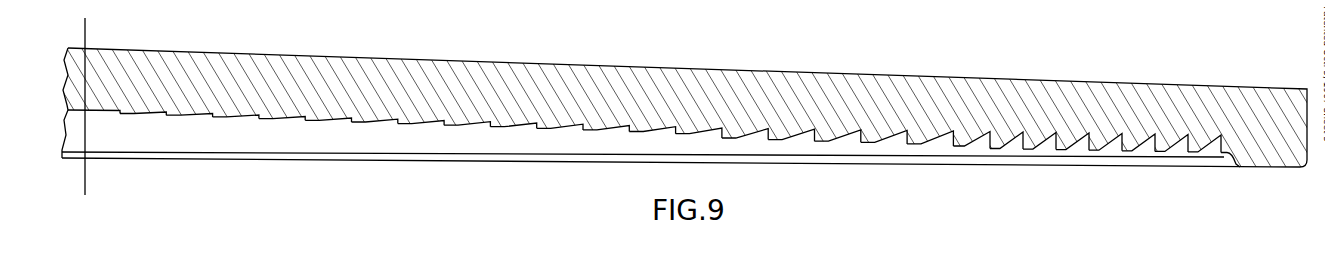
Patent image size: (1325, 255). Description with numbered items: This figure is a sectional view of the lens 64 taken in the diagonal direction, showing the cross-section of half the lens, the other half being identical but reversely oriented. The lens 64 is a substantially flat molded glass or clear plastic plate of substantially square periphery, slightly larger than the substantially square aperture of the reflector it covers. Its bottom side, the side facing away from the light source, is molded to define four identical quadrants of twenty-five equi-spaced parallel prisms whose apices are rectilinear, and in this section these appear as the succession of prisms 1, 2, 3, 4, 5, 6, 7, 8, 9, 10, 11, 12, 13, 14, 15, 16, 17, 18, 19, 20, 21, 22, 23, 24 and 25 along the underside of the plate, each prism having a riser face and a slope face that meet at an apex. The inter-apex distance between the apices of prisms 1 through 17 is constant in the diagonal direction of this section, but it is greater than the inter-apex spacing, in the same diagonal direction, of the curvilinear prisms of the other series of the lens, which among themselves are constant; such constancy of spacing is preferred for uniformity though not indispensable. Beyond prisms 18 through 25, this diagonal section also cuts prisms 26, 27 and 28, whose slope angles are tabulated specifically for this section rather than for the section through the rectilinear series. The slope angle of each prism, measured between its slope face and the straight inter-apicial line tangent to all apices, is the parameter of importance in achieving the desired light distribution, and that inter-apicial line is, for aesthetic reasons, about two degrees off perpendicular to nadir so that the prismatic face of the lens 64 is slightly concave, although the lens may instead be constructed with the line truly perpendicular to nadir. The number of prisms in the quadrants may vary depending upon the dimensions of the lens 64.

The prism 1 is at (108, 110).
The prism 2 is at (150, 113).
The prism 3 is at (192, 115).
The prism 4 is at (240, 116).
The prism 5 is at (285, 118).
The prism 6 is at (332, 119).
The prism 7 is at (372, 121).
The prism 8 is at (418, 123).
The prism 9 is at (468, 124).
The prism 10 is at (515, 126).
The prism 11 is at (562, 127).
The prism 12 is at (607, 128).
The prism 13 is at (652, 130).
The prism 14 is at (698, 132).
The prism 15 is at (742, 136).
The prism 16 is at (788, 138).
The prism 17 is at (830, 141).
The prism 18 is at (890, 137).
The prism 19 is at (923, 143).
The prism 20 is at (961, 146).
The prism 21 is at (997, 148).
The prism 22 is at (1030, 149).
The prism 23 is at (1063, 150).
The prism 24 is at (1096, 150).
The prism 25 is at (1129, 151).
The prism 26 is at (1162, 151).
The prism 27 is at (1195, 152).
The prism 28 is at (1224, 152).
The lens 64 is at (962, 82).